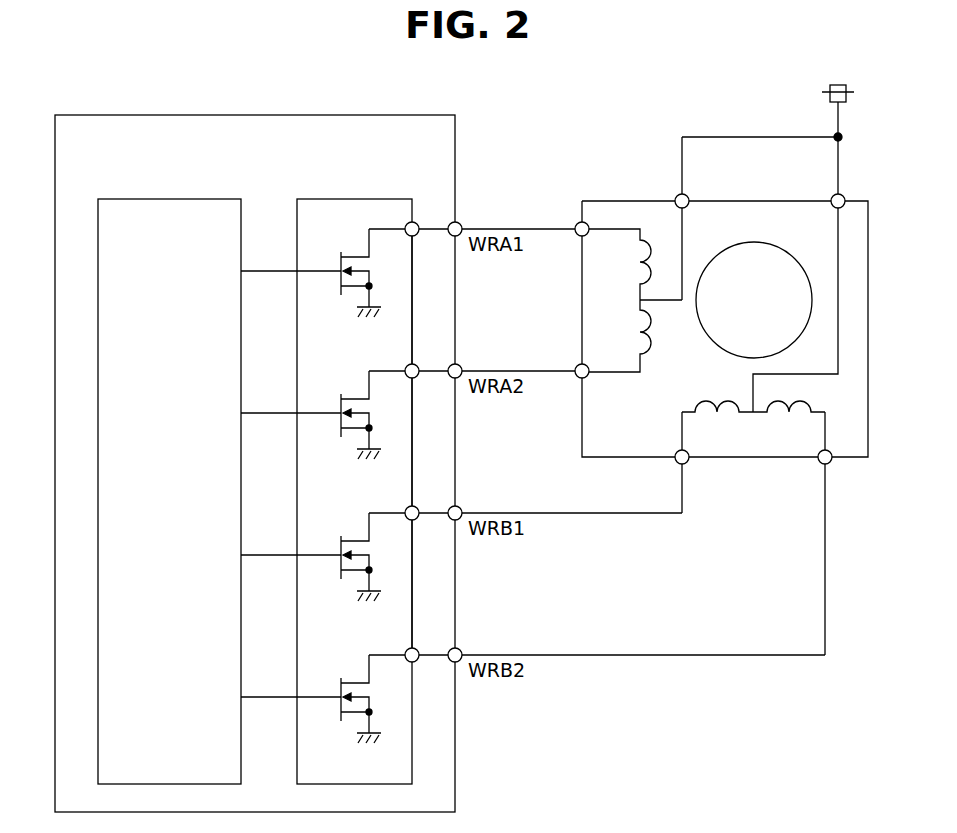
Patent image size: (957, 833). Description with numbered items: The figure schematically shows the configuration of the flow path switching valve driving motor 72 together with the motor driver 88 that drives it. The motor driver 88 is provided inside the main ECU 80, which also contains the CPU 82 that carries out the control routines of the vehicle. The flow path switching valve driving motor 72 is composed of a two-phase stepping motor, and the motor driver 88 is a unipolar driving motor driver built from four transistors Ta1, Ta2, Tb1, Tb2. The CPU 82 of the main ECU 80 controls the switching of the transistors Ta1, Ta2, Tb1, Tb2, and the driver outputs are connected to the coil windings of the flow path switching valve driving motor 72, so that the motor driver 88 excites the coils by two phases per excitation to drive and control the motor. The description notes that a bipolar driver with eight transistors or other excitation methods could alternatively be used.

The main electronic control unit 80 is at (250, 113).
The CPU 82 is at (170, 197).
The motor driver 88 is at (340, 197).
The flow path switching valve driving motor 72 is at (738, 462).
The transistor Ta1 is at (341, 315).
The transistor Ta2 is at (341, 457).
The transistor Tb1 is at (341, 599).
The transistor Tb2 is at (341, 741).